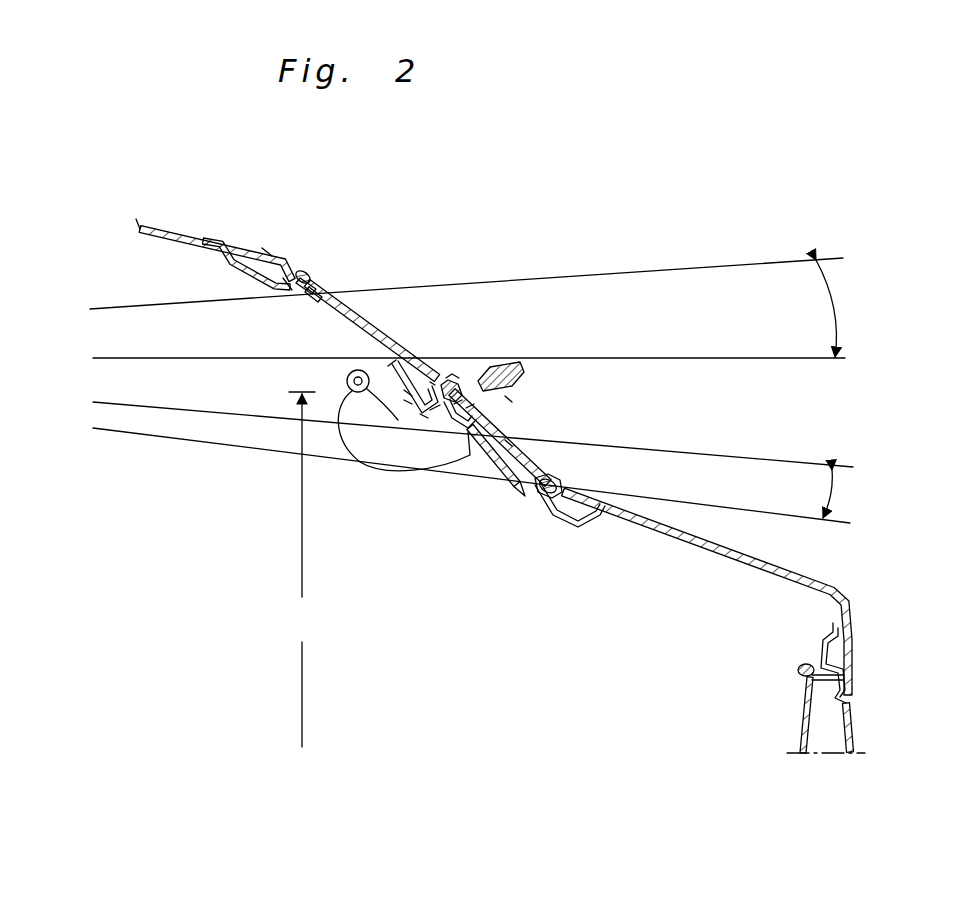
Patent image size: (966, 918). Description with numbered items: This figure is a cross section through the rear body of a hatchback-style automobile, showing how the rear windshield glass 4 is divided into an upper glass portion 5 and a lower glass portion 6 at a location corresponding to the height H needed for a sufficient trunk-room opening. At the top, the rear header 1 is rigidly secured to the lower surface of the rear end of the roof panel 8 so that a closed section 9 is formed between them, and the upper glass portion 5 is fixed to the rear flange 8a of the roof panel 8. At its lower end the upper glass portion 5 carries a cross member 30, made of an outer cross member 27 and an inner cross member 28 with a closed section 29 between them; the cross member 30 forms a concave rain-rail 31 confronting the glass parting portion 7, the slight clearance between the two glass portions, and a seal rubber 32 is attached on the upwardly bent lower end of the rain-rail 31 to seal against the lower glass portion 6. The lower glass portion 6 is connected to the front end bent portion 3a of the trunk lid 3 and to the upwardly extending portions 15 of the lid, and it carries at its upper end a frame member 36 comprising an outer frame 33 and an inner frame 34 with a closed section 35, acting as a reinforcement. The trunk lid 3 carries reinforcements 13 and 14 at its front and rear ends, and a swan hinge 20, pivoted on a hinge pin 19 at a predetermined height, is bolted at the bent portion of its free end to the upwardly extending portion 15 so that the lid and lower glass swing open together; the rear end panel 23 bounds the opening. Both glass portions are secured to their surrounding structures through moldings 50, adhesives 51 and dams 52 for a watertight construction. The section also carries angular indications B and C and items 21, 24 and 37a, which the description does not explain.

The rear header 1 is at (267, 247).
The trunk lid 3 is at (745, 550).
The front end bent portion 3a is at (537, 498).
The rear windshield glass 4 is at (331, 284).
The upper glass portion 5 is at (352, 312).
The lower glass portion 6 is at (500, 428).
The glass parting portion 7 is at (448, 375).
The roof panel 8 is at (160, 228).
The rear flange 8a is at (290, 292).
The closed section 9 is at (240, 252).
The reinforcement 13 is at (582, 530).
The reinforcement 14 is at (822, 641).
The upwardly extending portion 15 is at (512, 443).
The hinge pin 19 is at (345, 383).
The swan hinge 20 is at (412, 470).
The support arm 21 is at (490, 458).
The rear end panel 23 is at (855, 730).
The roof opening 24 is at (630, 694).
The outer cross member 27 is at (393, 362).
The inner cross member 28 is at (398, 403).
The closed section 29 is at (408, 392).
The cross member 30 is at (425, 414).
The rain-rail 31 is at (436, 434).
The seal rubber 32 is at (462, 376).
The outer frame 33 is at (510, 398).
The inner frame 34 is at (470, 432).
The closed section 35 is at (458, 430).
The frame member 36 is at (446, 428).
The seal 37a is at (518, 362).
The molding 50 is at (307, 272).
The adhesive 51 is at (303, 300).
The dam 52 is at (316, 296).
The angle B is at (830, 300).
The angle C is at (830, 494).
The height H is at (300, 569).